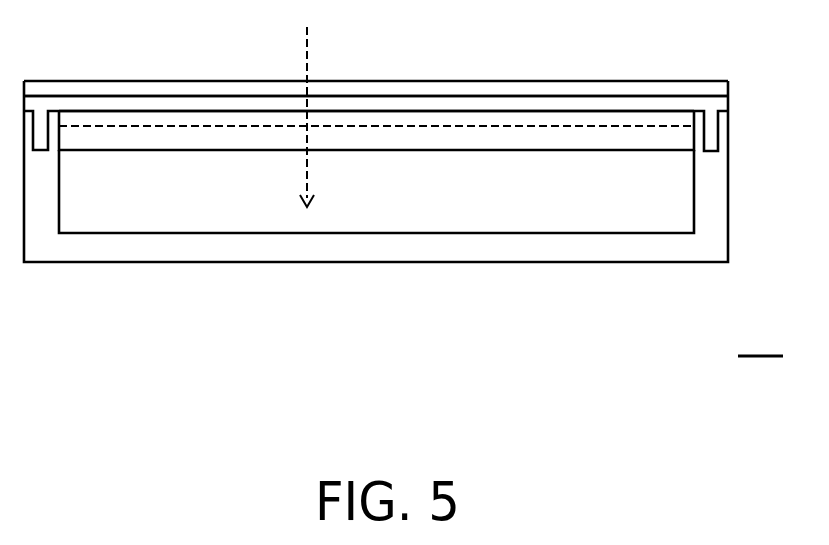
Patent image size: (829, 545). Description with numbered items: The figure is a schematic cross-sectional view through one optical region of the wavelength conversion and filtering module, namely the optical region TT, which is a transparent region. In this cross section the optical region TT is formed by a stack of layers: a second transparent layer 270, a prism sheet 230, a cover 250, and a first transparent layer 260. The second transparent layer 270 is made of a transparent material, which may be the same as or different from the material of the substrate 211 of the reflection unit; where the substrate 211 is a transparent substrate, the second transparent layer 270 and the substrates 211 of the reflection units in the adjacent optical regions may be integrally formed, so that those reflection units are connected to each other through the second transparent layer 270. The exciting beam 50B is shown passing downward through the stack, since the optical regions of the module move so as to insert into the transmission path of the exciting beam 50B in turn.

The substrate 211 is at (207, 248).
The first transparent layer 260 is at (715, 93).
The cover 250 is at (715, 107).
The prism sheet 230 is at (672, 141).
The second transparent layer 270 is at (675, 183).
The exciting beam 50B is at (306, 70).
The optical region TT is at (760, 333).